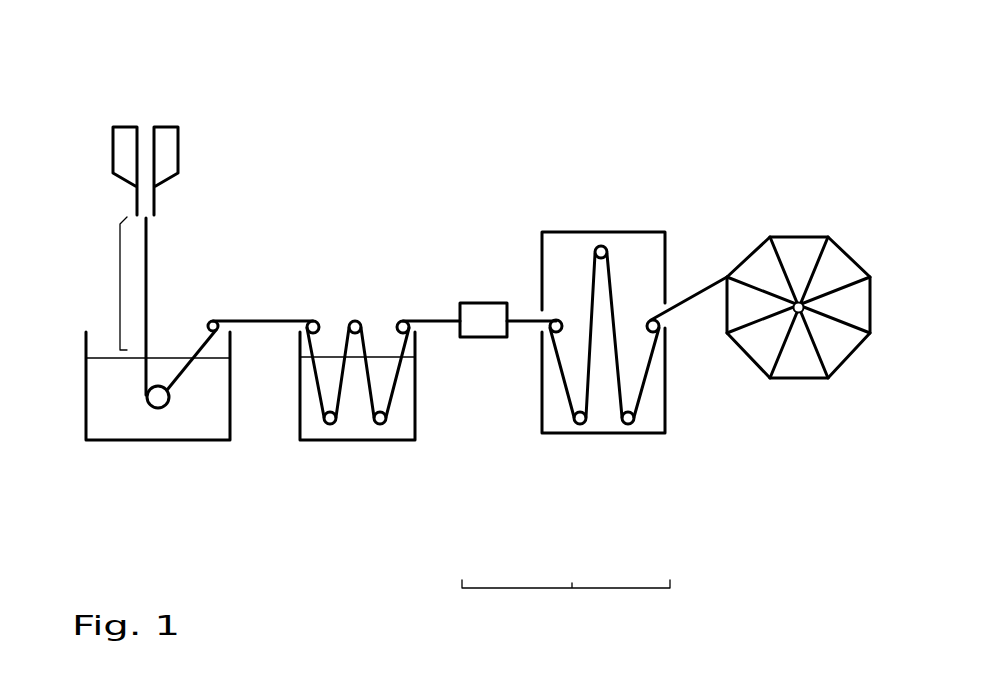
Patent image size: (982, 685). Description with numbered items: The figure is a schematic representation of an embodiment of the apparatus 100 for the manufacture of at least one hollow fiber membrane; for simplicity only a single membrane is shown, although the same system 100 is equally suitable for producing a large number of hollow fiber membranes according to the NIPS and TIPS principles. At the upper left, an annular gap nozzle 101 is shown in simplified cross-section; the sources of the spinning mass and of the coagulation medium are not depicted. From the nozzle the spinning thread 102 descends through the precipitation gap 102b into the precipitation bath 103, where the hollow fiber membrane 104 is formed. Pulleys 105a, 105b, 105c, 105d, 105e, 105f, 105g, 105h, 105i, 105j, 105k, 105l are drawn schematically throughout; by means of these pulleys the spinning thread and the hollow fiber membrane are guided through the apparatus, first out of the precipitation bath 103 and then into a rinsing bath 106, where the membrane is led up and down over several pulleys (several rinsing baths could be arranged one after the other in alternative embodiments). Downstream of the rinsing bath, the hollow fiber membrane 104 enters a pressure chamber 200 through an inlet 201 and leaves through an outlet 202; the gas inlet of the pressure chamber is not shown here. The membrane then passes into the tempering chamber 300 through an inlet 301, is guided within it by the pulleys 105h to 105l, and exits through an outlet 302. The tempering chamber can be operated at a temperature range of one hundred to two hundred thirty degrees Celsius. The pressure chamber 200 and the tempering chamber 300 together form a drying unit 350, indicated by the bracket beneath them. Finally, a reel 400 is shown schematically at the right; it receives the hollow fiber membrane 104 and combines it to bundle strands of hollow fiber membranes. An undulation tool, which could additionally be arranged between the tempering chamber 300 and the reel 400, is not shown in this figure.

The apparatus 100 is at (540, 92).
The annular gap nozzle 101 is at (175, 152).
The spinning thread 102 is at (146, 262).
The precipitation gap 102b is at (120, 293).
The precipitation bath 103 is at (212, 425).
The hollow fiber membrane 104 is at (275, 318).
The pulley 105a is at (152, 407).
The pulley 105b is at (213, 320).
The pulley 105c is at (316, 320).
The pulley 105d is at (327, 424).
The pulley 105e is at (357, 320).
The pulley 105f is at (385, 425).
The pulley 105g is at (410, 333).
The pulley 105h is at (556, 320).
The pulley 105i is at (573, 437).
The pulley 105j is at (602, 246).
The pulley 105k is at (633, 437).
The pulley 105l is at (660, 333).
The rinsing bath 106 is at (348, 425).
The pressure chamber 200 is at (470, 302).
The inlet 201 is at (456, 320).
The outlet 202 is at (512, 327).
The tempering chamber 300 is at (608, 427).
The inlet 301 is at (541, 312).
The outlet 302 is at (665, 305).
The drying unit 350 is at (566, 603).
The reel 400 is at (800, 237).